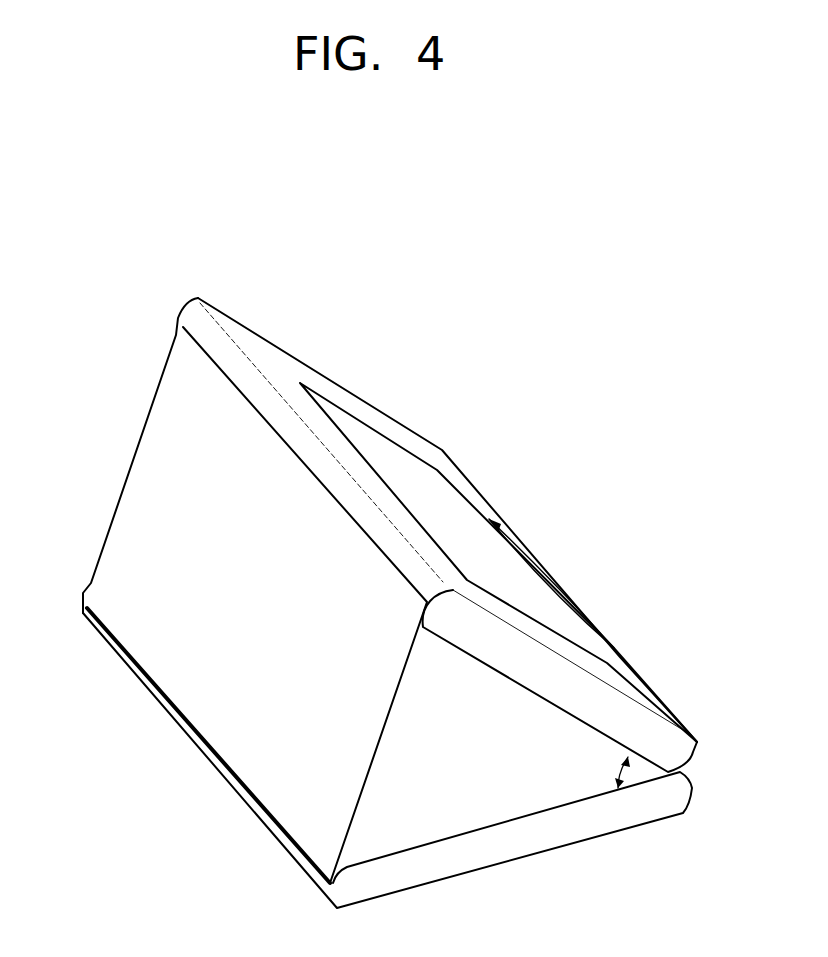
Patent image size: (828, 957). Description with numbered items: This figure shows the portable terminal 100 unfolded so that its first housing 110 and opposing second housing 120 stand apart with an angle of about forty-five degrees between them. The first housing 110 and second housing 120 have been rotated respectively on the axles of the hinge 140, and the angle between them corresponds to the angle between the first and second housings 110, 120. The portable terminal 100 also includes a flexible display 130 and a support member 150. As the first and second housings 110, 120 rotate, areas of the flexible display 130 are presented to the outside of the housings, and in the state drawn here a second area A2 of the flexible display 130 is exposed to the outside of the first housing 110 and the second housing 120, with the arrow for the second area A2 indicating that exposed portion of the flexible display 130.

The portable terminal 100 is at (375, 575).
The first housing 110 is at (527, 842).
The second housing 120 is at (637, 683).
The flexible display 130 is at (147, 470).
The hinge 140 is at (550, 580).
The support member 150 is at (393, 460).
The second area A2 is at (200, 648).